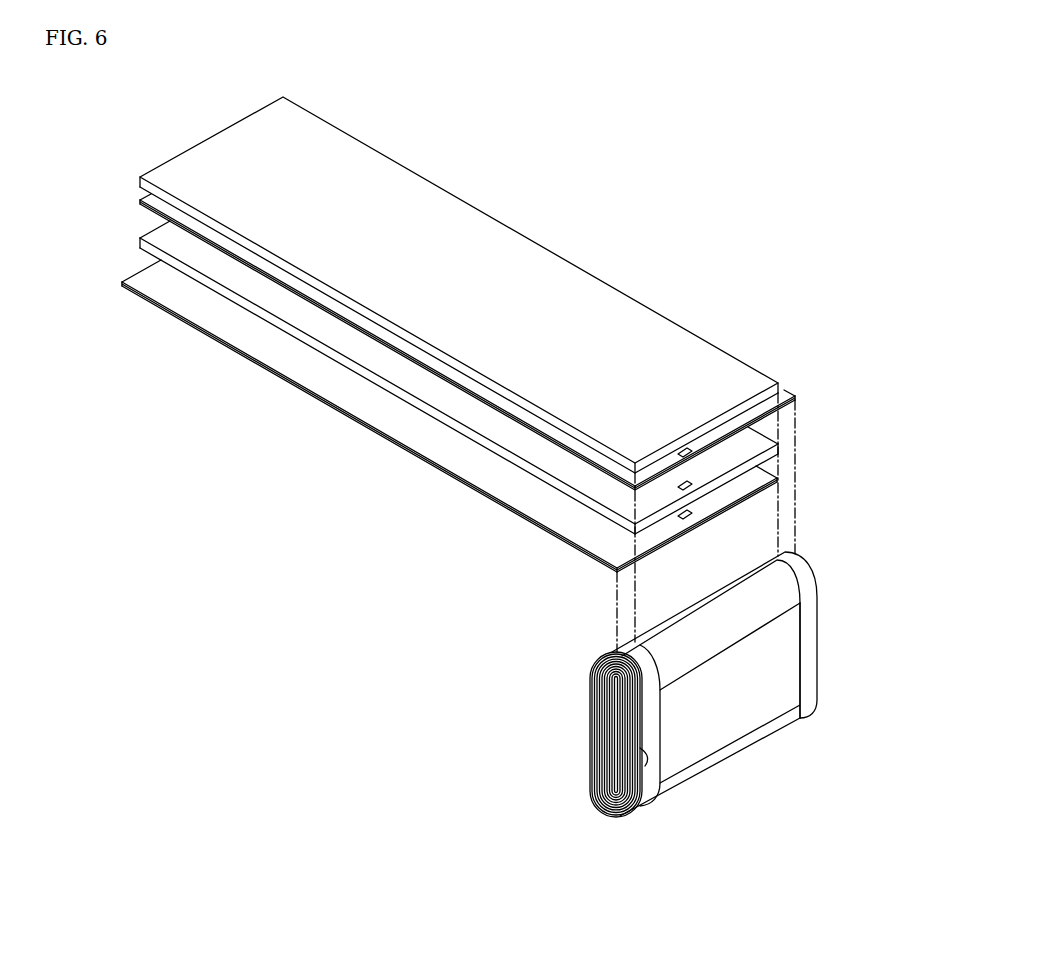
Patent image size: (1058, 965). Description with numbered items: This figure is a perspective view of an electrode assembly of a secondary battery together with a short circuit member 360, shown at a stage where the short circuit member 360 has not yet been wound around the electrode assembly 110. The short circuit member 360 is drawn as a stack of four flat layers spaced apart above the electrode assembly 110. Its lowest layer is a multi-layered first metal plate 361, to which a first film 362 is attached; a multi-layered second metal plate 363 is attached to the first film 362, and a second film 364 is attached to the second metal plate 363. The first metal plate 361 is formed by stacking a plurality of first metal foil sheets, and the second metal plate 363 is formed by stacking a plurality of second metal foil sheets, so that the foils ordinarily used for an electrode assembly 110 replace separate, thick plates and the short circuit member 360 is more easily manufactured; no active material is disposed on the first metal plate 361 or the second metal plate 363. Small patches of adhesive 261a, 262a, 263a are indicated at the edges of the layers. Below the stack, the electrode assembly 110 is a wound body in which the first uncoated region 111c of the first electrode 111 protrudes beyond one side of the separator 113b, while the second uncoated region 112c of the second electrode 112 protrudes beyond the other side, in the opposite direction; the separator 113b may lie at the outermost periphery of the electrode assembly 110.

The short circuit member 360 is at (466, 374).
The second film 364 is at (165, 168).
The second metal plate 363 is at (155, 205).
The first film 362 is at (158, 236).
The first metal plate 361 is at (148, 276).
The adhesive 263a is at (694, 449).
The adhesive 262a is at (693, 484).
The adhesive 261a is at (694, 513).
The electrode assembly 110 is at (712, 689).
The second electrode 112 is at (747, 689).
The second uncoated region 112c is at (815, 655).
The first electrode 111 is at (606, 720).
The first uncoated region 111c is at (622, 767).
The separator 113b is at (693, 753).